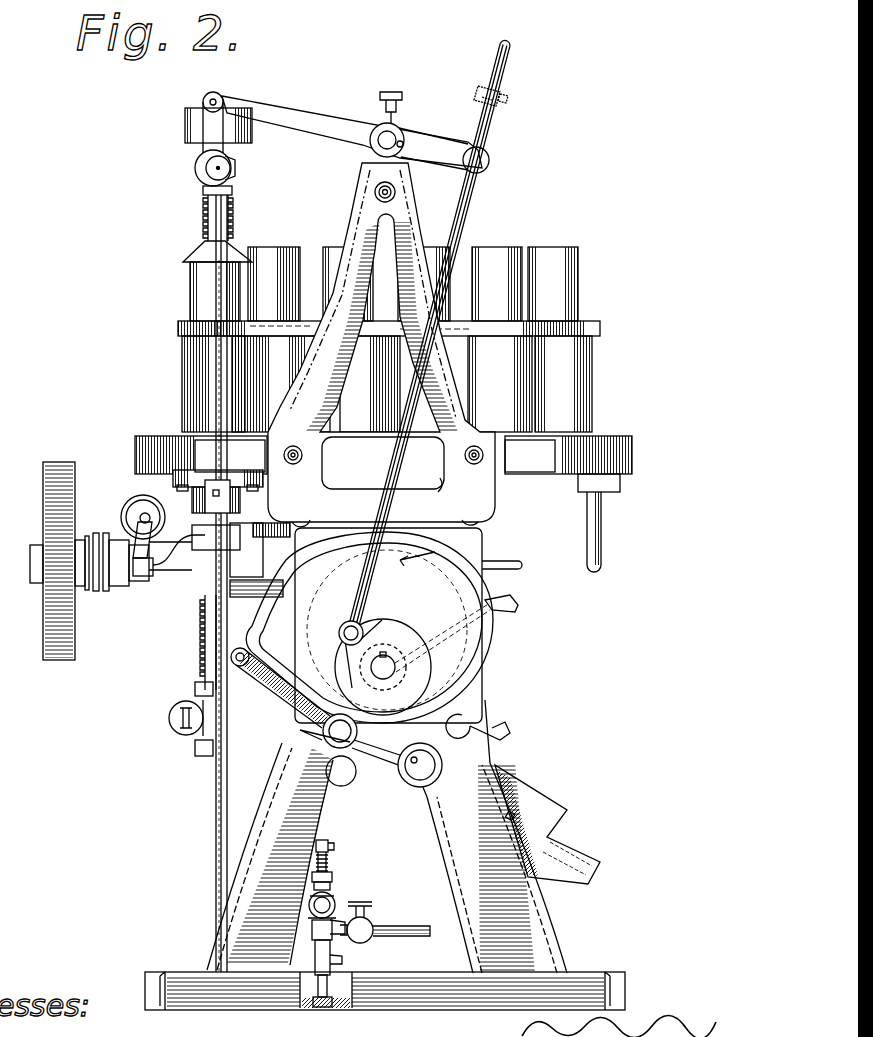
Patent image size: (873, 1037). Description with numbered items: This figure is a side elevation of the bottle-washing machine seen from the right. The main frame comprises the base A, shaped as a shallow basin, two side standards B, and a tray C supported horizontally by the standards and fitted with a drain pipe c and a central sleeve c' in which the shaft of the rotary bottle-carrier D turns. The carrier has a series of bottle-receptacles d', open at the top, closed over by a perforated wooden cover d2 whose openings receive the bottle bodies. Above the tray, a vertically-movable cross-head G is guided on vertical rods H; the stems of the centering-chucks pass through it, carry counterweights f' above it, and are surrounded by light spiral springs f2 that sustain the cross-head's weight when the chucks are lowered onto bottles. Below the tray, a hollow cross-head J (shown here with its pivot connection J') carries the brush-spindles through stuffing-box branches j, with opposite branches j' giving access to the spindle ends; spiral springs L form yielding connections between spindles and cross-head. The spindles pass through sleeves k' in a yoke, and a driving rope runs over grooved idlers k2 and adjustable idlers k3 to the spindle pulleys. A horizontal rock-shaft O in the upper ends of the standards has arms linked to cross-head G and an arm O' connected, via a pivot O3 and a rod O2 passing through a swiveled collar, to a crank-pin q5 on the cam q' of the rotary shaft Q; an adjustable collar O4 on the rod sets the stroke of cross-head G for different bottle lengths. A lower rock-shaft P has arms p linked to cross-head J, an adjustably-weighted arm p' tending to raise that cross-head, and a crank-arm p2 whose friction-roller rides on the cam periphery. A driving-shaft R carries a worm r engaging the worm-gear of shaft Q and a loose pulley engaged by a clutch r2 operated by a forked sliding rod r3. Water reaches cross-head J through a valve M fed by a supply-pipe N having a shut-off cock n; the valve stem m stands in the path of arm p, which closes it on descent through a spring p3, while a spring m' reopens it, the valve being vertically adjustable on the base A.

The base A is at (385, 991).
The side standard B is at (387, 568).
The tray C is at (375, 456).
The drain pipe c is at (583, 532).
The central sleeve c' is at (430, 493).
The rotary bottle-carrier D is at (165, 436).
The bottle-receptacle d' is at (371, 336).
The cover d2 is at (178, 330).
The counterweight f' is at (204, 125).
The spiral spring f2 is at (232, 216).
The cross-head G is at (200, 190).
The vertical rod H is at (212, 214).
The stuffing-box branch j is at (193, 686).
The pivot block J' is at (181, 718).
The branch j' is at (191, 746).
The sleeve k' is at (200, 496).
The grooved idler k2 is at (176, 540).
The idler k3 is at (124, 506).
The spiral spring L is at (204, 636).
The valve M is at (333, 890).
The valve stem m is at (333, 845).
The spring m' is at (338, 862).
The supply-pipe N is at (418, 926).
The cock n is at (368, 910).
The rock-shaft O is at (342, 128).
The arm O' is at (419, 139).
The rod O2 is at (470, 202).
The pivot O3 is at (489, 159).
The adjustable collar O4 is at (478, 98).
The rock-shaft P is at (414, 788).
The arm p is at (280, 688).
The adjustably-weighted arm p' is at (547, 834).
The crank-arm p2 is at (357, 750).
The spring p3 is at (300, 722).
The rotary shaft Q is at (378, 672).
The cam q' is at (393, 634).
The crank-pin q5 is at (339, 636).
The driving-shaft R is at (248, 545).
The worm r is at (59, 561).
The clutch r2 is at (86, 586).
The forked sliding rod r3 is at (514, 561).